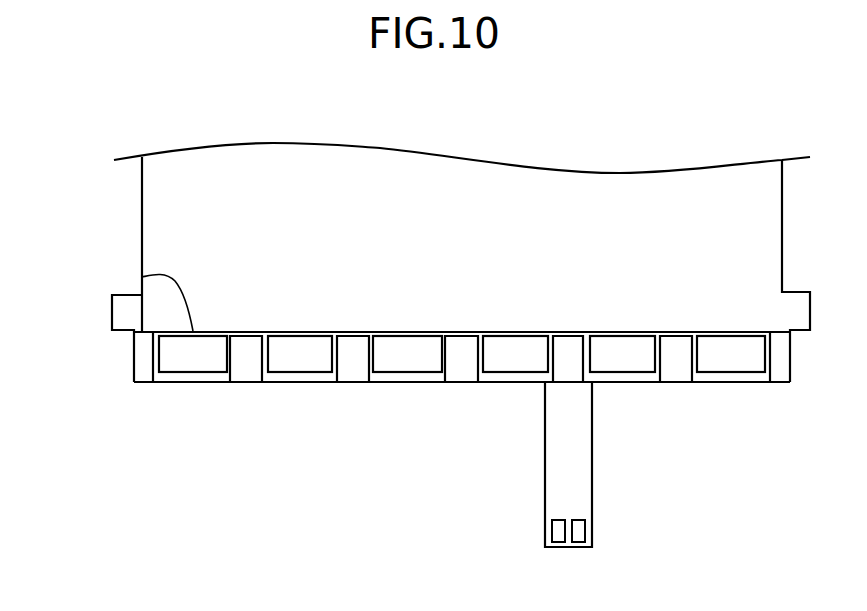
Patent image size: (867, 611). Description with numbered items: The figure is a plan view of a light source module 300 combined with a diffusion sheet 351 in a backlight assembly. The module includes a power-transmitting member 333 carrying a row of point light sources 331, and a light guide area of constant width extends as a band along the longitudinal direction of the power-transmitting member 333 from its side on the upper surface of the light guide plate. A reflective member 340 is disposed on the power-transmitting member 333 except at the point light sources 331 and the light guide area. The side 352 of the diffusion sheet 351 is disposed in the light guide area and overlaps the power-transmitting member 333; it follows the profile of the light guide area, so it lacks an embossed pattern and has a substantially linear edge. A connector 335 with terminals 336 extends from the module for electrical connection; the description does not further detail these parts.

The light source module 300 is at (462, 410).
The point light source 331 is at (177, 362).
The power-transmitting member 333 is at (233, 382).
The connector 335 is at (587, 485).
The terminal 336 is at (587, 528).
The reflective member 340 is at (352, 362).
The diffusion sheet 351 is at (142, 219).
The side of the diffusion sheet 352 is at (142, 277).